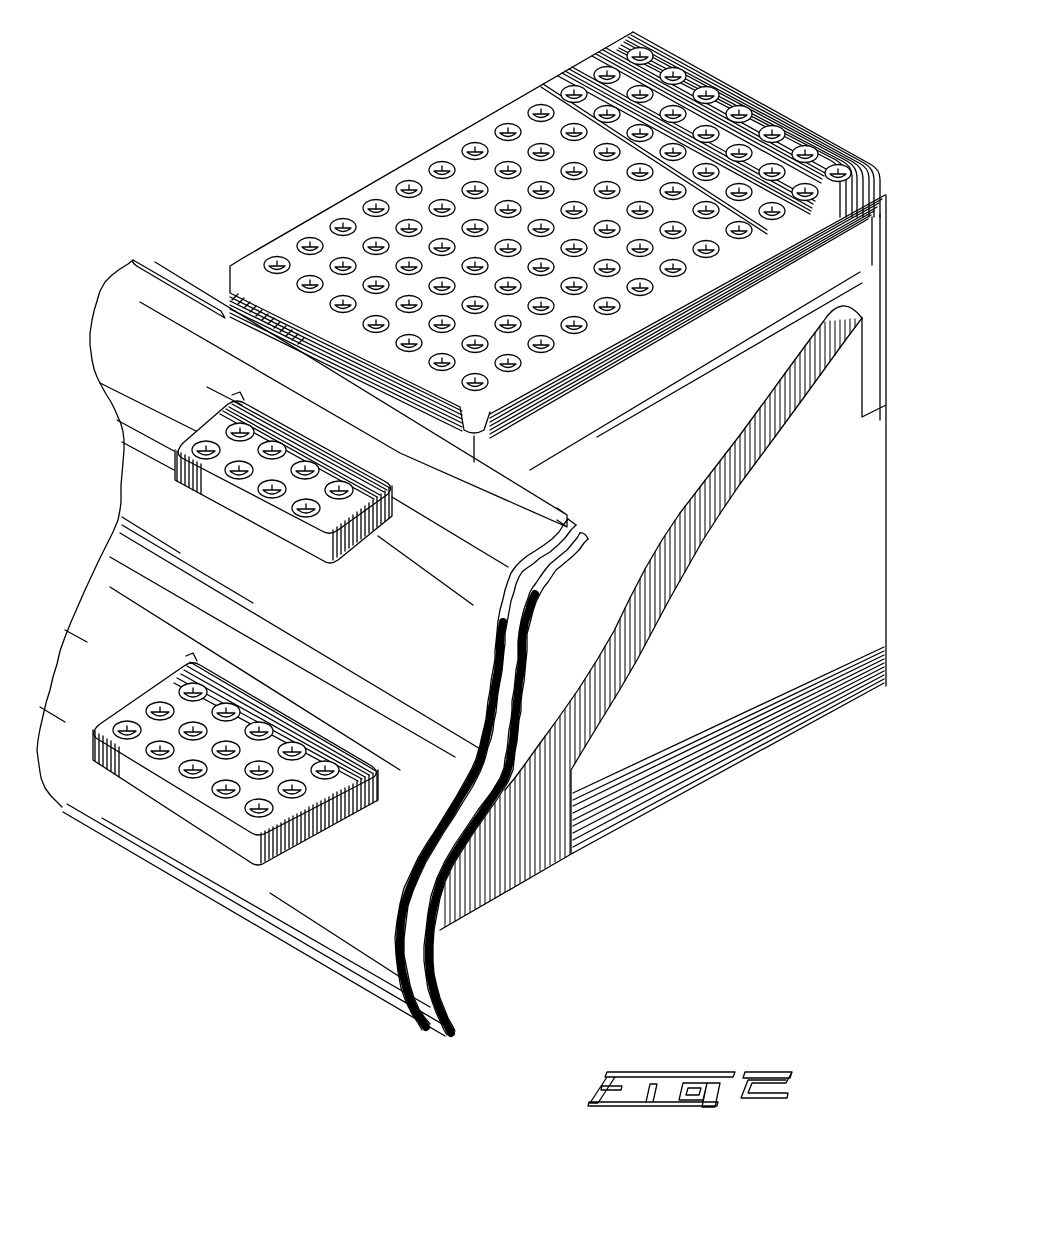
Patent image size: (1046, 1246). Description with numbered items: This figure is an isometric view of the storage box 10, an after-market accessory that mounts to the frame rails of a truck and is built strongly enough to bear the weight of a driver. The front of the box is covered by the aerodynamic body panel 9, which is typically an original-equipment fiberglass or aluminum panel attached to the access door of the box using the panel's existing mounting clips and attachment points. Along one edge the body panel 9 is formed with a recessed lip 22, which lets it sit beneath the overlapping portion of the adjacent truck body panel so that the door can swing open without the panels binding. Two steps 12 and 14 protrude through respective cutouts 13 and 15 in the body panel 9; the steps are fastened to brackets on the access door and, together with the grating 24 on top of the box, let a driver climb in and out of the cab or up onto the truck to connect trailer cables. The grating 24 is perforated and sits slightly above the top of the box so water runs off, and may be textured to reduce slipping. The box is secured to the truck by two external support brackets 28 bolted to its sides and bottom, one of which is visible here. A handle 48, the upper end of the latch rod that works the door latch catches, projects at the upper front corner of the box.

The storage box 10 is at (242, 66).
The grating 24 is at (740, 83).
The handle 48 is at (170, 272).
The cutout 15 is at (240, 388).
The step 14 is at (289, 540).
The cutout 13 is at (181, 660).
The step 12 is at (288, 838).
The external support bracket 28 is at (770, 397).
The aerodynamic body panel 9 is at (313, 963).
The recessed lip 22 is at (445, 1010).